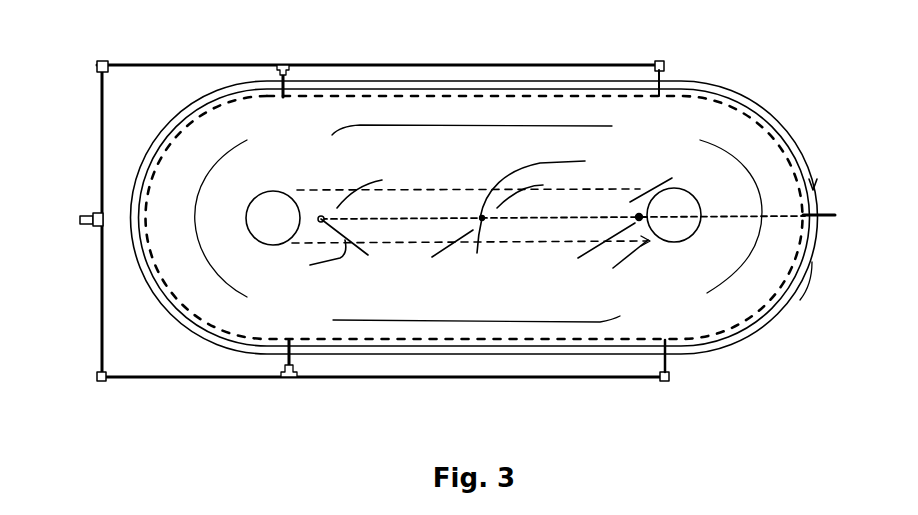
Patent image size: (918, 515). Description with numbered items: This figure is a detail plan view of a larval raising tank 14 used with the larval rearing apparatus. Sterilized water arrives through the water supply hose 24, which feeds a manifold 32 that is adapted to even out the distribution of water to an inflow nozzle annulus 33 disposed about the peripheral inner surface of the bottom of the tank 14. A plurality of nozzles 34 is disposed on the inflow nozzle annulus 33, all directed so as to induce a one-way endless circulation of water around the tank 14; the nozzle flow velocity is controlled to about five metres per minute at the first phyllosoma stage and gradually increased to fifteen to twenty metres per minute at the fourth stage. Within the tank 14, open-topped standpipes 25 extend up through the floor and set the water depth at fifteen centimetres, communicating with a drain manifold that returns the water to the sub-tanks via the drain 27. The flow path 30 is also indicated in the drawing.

The tank 14 is at (732, 90).
The water supply hose 24 is at (94, 216).
The standpipe 25 is at (639, 217).
The drain 27 is at (835, 215).
The flow path 30 is at (477, 190).
The manifold 32 is at (200, 63).
The inflow nozzle annulus 33 is at (243, 336).
The nozzles 34 is at (782, 297).